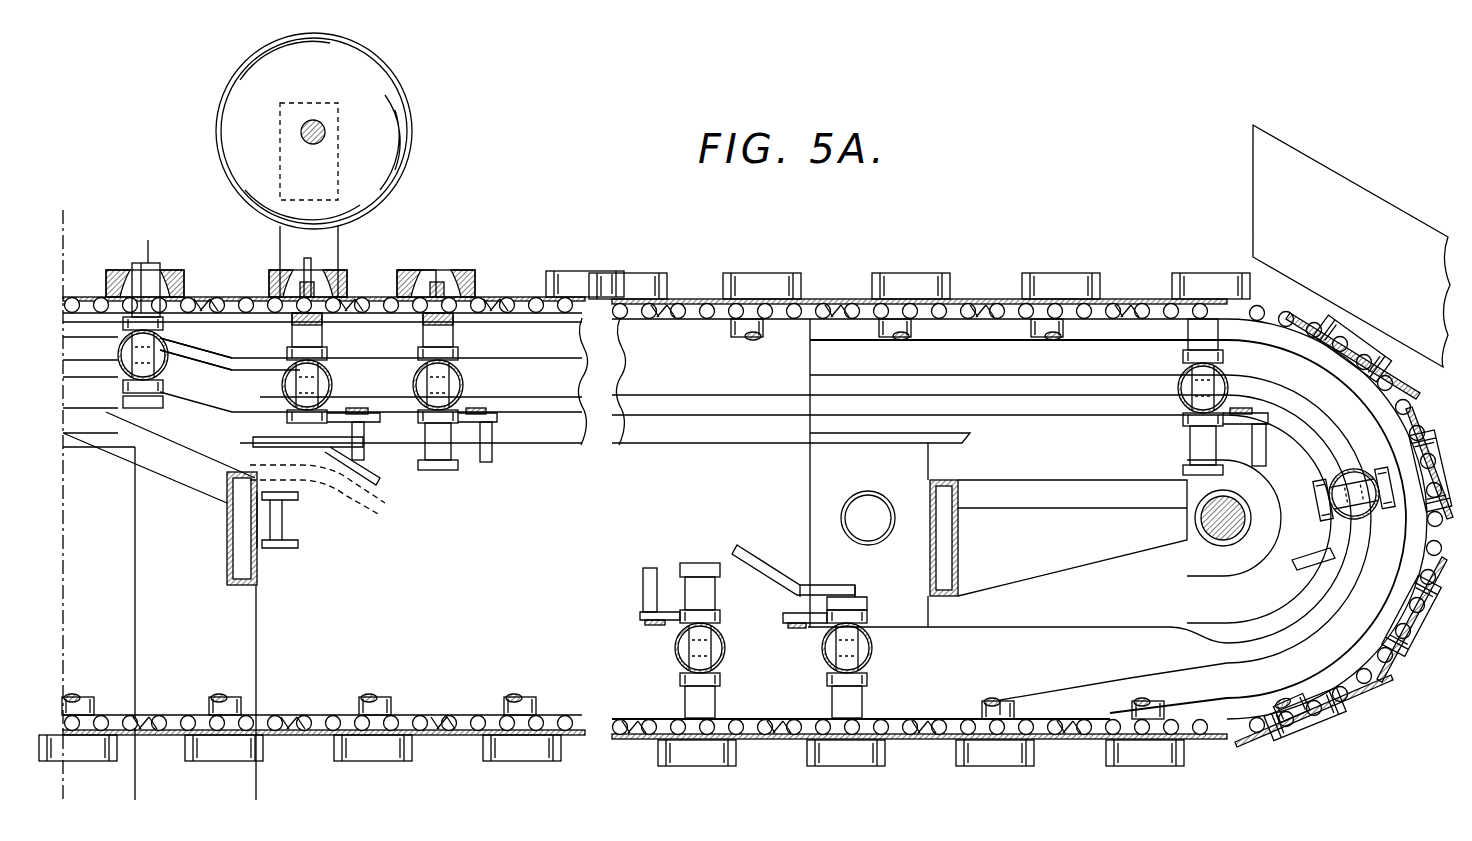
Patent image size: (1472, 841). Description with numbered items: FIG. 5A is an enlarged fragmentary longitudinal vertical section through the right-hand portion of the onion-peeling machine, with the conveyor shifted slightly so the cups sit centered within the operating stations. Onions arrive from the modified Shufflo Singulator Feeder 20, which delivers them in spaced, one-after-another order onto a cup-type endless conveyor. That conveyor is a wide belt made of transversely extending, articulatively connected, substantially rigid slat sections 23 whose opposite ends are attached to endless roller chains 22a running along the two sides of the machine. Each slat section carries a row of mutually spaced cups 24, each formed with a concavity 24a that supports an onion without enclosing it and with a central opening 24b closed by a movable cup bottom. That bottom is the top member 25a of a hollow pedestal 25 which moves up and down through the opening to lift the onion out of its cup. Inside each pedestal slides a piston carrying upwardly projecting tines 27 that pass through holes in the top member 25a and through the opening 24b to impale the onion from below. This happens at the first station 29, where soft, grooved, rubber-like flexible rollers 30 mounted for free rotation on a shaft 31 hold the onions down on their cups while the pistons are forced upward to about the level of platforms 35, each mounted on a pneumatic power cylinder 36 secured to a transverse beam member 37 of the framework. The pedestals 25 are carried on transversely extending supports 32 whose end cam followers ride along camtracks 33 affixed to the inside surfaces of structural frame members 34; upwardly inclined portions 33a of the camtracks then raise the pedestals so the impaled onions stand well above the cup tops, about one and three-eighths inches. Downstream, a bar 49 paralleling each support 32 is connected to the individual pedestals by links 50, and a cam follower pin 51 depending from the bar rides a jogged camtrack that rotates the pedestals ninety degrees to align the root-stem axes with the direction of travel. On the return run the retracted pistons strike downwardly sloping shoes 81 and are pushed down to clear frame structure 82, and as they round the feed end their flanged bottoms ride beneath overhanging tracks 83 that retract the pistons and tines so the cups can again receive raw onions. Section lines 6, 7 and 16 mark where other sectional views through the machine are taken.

The section line 6- 6 is at (1188, 556).
The section line 7- 7 is at (495, 532).
The section line 16- 16 is at (424, 487).
The Shufflo Singulator Feeder 20 is at (1373, 205).
The endless roller chains 22a is at (1404, 392).
The slat sections 23 is at (460, 738).
The cups 24 is at (782, 287).
The concavities 24a is at (451, 280).
The central opening 24b is at (424, 288).
The hollow element 25 is at (320, 345).
The top member 25a is at (310, 281).
The tines 27 is at (148, 263).
The first station 29 is at (243, 216).
The flexible rollers 30 is at (360, 93).
The shaft 31 is at (312, 118).
The supports 32 is at (332, 388).
The camtracks 33 is at (822, 380).
The upwardly inclined portions 33a is at (182, 355).
The structural frame members 34 is at (532, 387).
The platforms 35 is at (314, 482).
The power cylinder 36 is at (288, 538).
The transverse beam member 37 is at (258, 573).
The bar 49 is at (186, 367).
The links 50 is at (458, 410).
The cam follower pin 51 is at (363, 428).
The shoes 81 is at (767, 564).
The frame structure 82 is at (958, 542).
The overhanging tracks 83 is at (1250, 520).